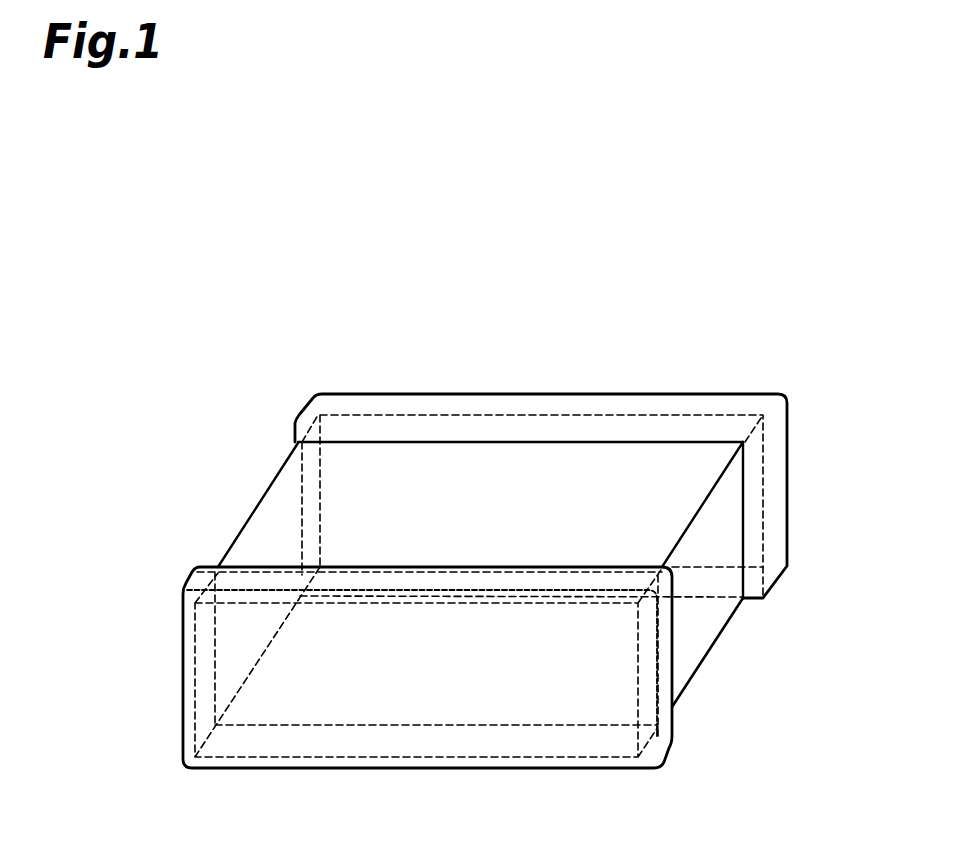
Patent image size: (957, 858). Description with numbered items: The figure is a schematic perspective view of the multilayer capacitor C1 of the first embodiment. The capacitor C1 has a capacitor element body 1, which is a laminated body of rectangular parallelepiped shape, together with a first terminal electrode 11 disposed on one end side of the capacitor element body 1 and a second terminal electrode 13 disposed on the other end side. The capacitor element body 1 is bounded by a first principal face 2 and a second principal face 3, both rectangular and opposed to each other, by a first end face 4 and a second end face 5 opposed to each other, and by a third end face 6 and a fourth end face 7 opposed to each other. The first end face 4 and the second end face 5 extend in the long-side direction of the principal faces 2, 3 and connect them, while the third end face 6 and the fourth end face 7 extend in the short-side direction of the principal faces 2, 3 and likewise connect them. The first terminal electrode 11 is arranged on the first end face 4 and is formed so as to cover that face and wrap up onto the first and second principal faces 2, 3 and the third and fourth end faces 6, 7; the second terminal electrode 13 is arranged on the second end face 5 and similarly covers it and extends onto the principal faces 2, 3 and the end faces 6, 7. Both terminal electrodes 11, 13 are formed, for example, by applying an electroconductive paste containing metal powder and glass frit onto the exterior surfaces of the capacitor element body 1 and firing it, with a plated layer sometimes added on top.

The multilayer capacitor C1 is at (684, 246).
The capacitor element body 1 is at (727, 627).
The first principal face 2 is at (500, 483).
The second principal face 3 is at (567, 675).
The first end face 4 is at (592, 455).
The second end face 5 is at (250, 742).
The third end face 6 is at (267, 530).
The fourth end face 7 is at (682, 660).
The first terminal electrode 11 is at (787, 478).
The second terminal electrode 13 is at (334, 771).